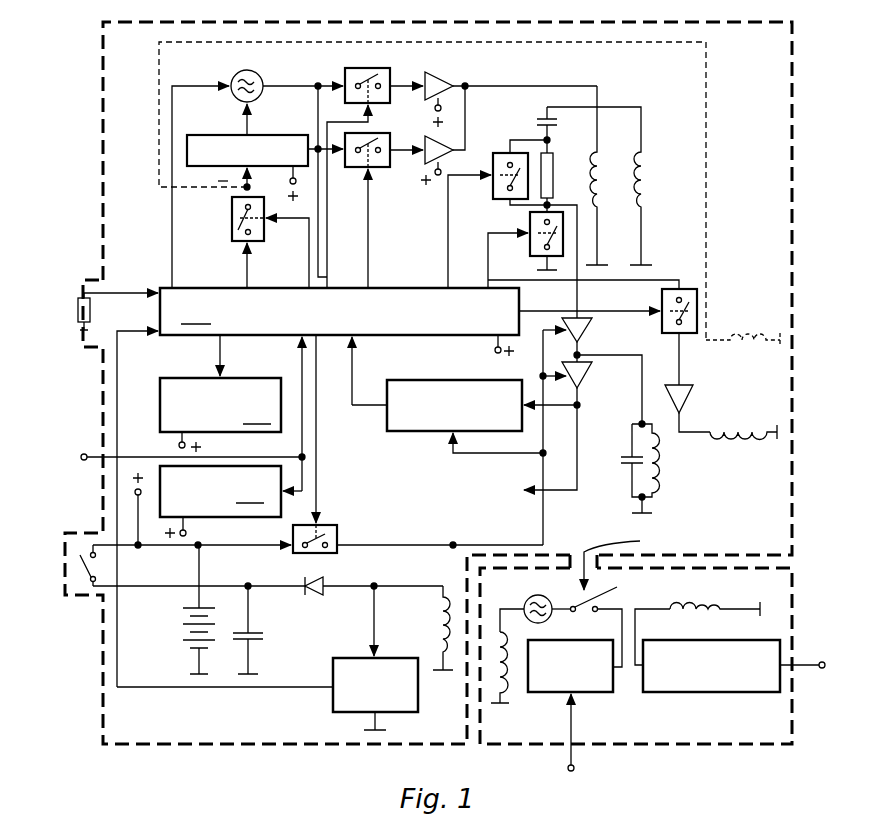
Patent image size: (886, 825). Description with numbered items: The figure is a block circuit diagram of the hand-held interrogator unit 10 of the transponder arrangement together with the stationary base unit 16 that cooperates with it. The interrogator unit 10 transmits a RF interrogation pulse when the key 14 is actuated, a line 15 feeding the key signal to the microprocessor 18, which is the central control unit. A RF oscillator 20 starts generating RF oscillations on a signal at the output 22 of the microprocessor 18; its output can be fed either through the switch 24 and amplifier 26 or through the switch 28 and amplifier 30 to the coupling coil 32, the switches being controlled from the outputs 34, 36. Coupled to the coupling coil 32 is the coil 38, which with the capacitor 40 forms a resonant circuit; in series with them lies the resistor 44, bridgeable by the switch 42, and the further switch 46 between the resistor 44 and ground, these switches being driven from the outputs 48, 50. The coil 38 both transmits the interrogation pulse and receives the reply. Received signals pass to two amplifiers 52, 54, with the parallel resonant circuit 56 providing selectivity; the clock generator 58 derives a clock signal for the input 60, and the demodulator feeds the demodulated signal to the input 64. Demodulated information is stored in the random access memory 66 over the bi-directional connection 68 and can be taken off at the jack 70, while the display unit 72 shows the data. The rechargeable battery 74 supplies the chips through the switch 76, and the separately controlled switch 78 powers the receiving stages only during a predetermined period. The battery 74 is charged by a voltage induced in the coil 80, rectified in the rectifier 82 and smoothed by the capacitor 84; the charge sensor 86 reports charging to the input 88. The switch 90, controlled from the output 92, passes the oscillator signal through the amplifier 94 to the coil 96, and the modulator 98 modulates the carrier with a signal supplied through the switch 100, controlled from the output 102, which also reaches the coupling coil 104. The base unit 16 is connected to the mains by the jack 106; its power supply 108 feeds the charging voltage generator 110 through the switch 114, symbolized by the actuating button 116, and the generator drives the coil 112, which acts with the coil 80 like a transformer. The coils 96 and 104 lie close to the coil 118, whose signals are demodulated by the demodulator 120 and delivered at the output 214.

The interrogator unit 10 is at (792, 115).
The key 14 is at (78, 300).
The sensor input line 15 is at (160, 288).
The base unit 16 is at (795, 600).
The microprocessor 18 is at (339, 322).
The RF oscillator 20 is at (263, 94).
The output of the microprocessor 22 is at (172, 287).
The switch 24 is at (378, 104).
The amplifier 26 is at (448, 80).
The switch 28 is at (353, 168).
The amplifier 30 is at (422, 168).
The coupling coil 32 is at (599, 168).
The output of the microprocessor 34 is at (327, 287).
The output of the microprocessor 36 is at (368, 287).
The coil 38 is at (643, 168).
The capacitor 40 is at (537, 121).
The switch 42 is at (493, 190).
The resistor 44 is at (553, 165).
The switch 46 is at (530, 245).
The output of the microprocessor 48 is at (448, 287).
The output of the microprocessor 50 is at (488, 287).
The amplifier 52 is at (588, 328).
The amplifier 54 is at (590, 368).
The parallel resonant circuit 56 is at (630, 483).
The clock generator 58 is at (458, 564).
The input of the microprocessor 60 is at (358, 342).
The input of the microprocessor 64 is at (345, 370).
The random access memory 66 is at (220, 502).
The bi-directional connection 68 is at (300, 372).
The jack 70 is at (82, 455).
The display unit 72 is at (220, 393).
The rechargeable battery 74 is at (190, 655).
The switch 76 is at (62, 530).
The switch 78 is at (337, 550).
The coil 80 is at (440, 625).
The rectifier 82 is at (305, 590).
The capacitor 84 is at (263, 640).
The charge sensor 86 is at (333, 715).
The input of the microprocessor 88 is at (155, 326).
The switch 90 is at (662, 305).
The output of the microprocessor 92 is at (520, 316).
The amplifier 94 is at (690, 390).
The coil 96 is at (735, 430).
The modulator 98 is at (224, 134).
The switch 100 is at (232, 230).
The output of the microprocessor 102 is at (309, 287).
The coupling coil 104 is at (738, 338).
The jack 106 is at (576, 768).
The power supply 108 is at (613, 685).
The charging voltage generator 110 is at (540, 595).
The coil 112 is at (512, 670).
The switch 114 is at (617, 592).
The actuating button 116 is at (638, 558).
The coil 118 is at (694, 604).
The demodulator 120 is at (710, 692).
The output terminal 214 is at (824, 668).